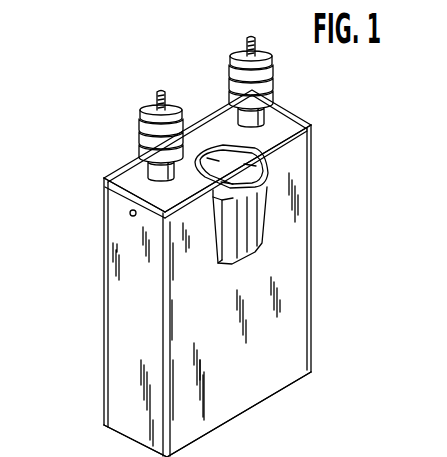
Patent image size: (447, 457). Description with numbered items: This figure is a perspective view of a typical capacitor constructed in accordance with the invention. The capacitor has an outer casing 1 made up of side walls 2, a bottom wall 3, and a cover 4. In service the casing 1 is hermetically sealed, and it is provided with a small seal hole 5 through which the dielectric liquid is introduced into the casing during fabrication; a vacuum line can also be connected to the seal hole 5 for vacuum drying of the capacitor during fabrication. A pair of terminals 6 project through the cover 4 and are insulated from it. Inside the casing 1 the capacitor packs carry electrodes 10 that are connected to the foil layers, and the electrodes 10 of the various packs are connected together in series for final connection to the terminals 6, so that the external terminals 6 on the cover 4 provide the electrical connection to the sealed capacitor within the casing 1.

The outer casing 1 is at (97, 287).
The side walls 2 is at (115, 357).
The bottom wall 3 is at (243, 412).
The cover 4 is at (292, 117).
The seal hole 5 is at (130, 213).
The terminal 6 is at (245, 45).
The electrodes 10 is at (222, 142).